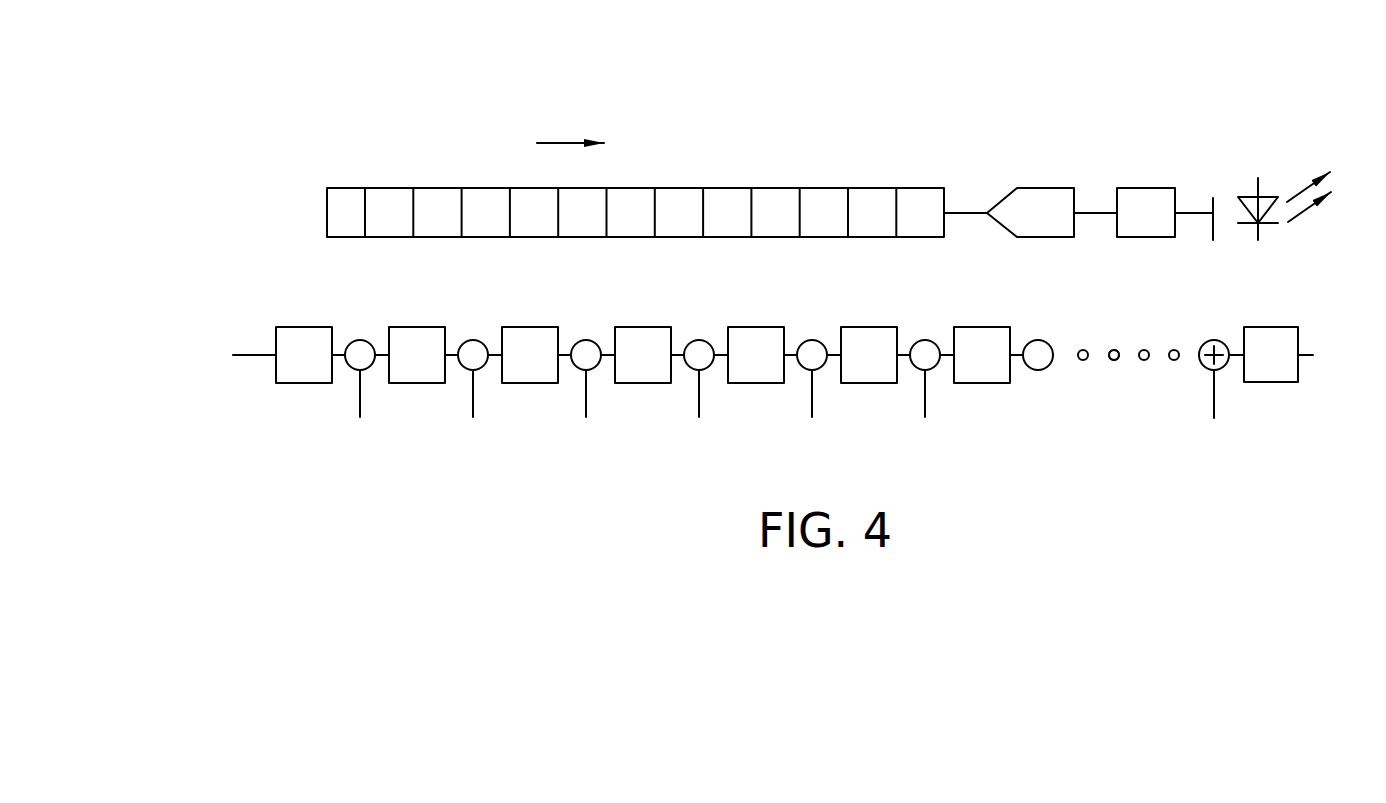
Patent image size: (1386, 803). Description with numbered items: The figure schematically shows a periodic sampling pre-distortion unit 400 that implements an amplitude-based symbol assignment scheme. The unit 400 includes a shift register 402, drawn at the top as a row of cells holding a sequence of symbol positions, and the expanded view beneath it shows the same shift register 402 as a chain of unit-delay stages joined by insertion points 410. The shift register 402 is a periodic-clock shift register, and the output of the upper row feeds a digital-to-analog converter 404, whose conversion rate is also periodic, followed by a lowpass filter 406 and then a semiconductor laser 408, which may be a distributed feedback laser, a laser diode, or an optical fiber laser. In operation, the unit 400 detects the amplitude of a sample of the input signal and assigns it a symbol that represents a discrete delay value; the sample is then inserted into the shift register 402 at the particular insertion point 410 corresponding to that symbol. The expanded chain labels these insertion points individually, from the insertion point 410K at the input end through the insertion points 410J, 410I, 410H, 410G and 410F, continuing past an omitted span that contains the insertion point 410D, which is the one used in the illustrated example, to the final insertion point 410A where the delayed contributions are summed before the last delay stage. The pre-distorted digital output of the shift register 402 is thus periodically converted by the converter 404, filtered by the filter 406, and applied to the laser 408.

The periodic sampling pre-distortion unit 400 is at (961, 87).
The shift register 402 is at (343, 188).
The digital-to-analog (D-A) converter 404 is at (1043, 188).
The lowpass filter 406 is at (1147, 188).
The semiconductor laser 408 is at (1281, 161).
The insertion points 410 is at (760, 377).
The insertion point 410K is at (350, 368).
The insertion point 410J is at (477, 340).
The insertion point 410I is at (590, 340).
The insertion point 410H is at (703, 340).
The insertion point 410G is at (816, 340).
The insertion point 410F is at (929, 340).
The insertion point 410D is at (1111, 369).
The insertion point 410A is at (1217, 340).